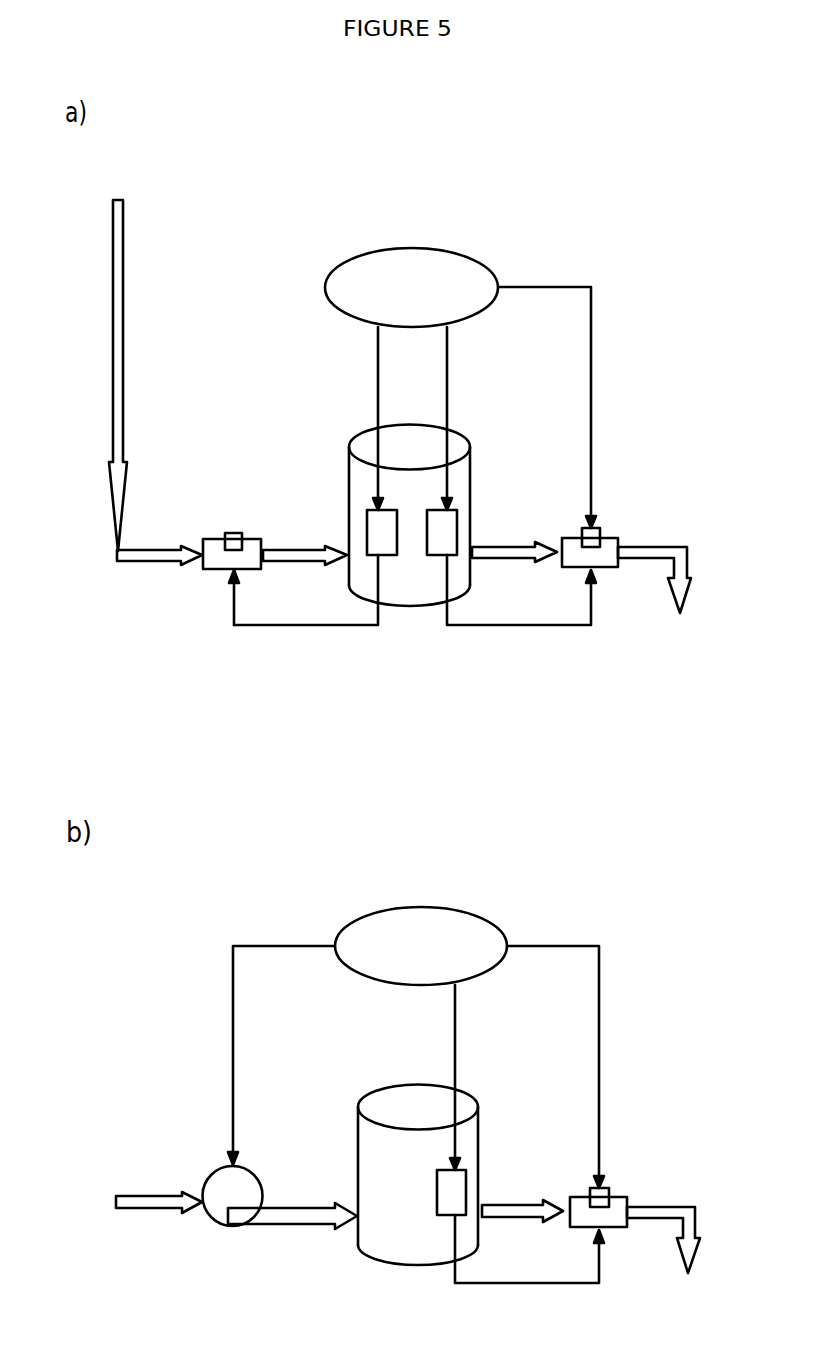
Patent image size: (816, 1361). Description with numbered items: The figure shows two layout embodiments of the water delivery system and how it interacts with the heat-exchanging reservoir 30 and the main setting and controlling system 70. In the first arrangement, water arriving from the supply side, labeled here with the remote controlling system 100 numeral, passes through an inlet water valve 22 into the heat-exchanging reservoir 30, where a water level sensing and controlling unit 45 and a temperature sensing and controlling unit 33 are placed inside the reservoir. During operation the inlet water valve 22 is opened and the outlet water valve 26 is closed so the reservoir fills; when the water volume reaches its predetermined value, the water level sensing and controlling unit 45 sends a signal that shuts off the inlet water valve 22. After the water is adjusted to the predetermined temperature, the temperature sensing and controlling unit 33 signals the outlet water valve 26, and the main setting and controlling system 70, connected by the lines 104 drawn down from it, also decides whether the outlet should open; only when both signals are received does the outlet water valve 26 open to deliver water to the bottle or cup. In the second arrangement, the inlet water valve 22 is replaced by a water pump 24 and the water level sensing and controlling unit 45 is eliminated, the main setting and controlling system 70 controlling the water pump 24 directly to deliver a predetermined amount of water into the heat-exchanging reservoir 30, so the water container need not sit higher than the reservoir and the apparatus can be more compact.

In FIG. 5a, the remote controlling system 100 is at (122, 240).
In FIG. 5b, the remote controlling system 100 is at (143, 1203).
In FIG. 5a, the inlet water valve 22 is at (228, 540).
In FIG. 5b, the water pump 24 is at (232, 1187).
In FIG. 5a, the outlet water valve 26 is at (597, 553).
In FIG. 5b, the outlet water valve 26 is at (605, 1217).
In FIG. 5a, the heat-exchanging reservoir 30 is at (453, 516).
In FIG. 5b, the heat-exchanging reservoir 30 is at (460, 1175).
In FIG. 5a, the temperature sensing and controlling unit 33 is at (447, 527).
In FIG. 5b, the temperature sensing and controlling unit 33 is at (455, 1193).
In FIG. 5a, the water level sensing and controlling unit 45 is at (378, 527).
In FIG. 5a, the main setting and controlling system 70 is at (460, 388).
In FIG. 5b, the main setting and controlling system 70 is at (416, 1047).
In FIG. 5a, the powder flow 104 is at (447, 337).
In FIG. 5b, the powder flow 104 is at (455, 1016).